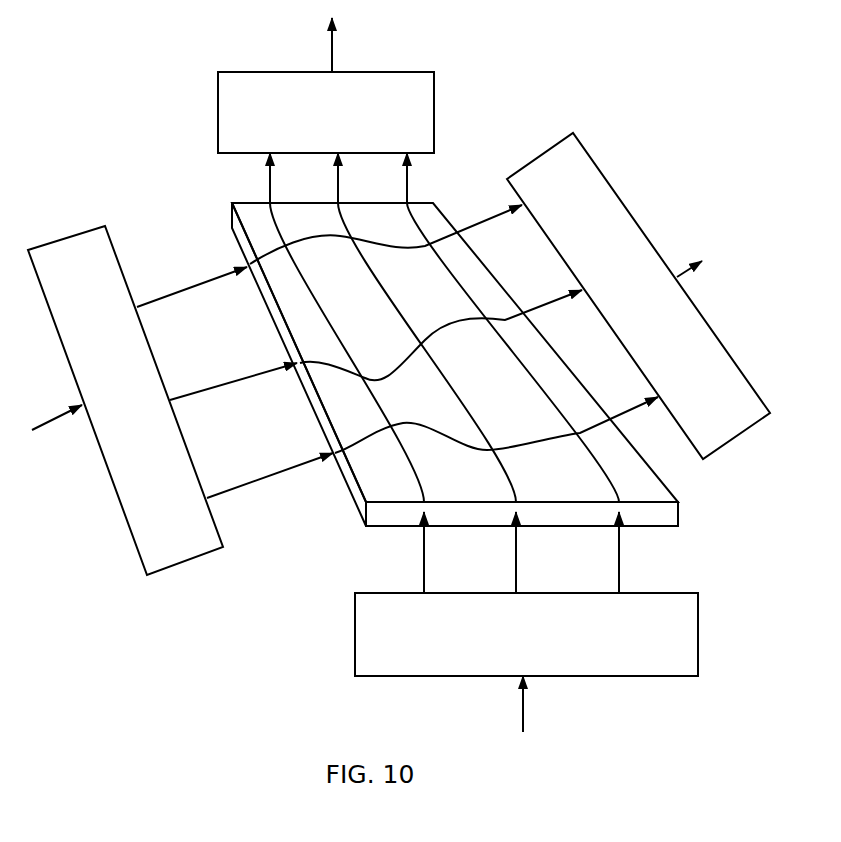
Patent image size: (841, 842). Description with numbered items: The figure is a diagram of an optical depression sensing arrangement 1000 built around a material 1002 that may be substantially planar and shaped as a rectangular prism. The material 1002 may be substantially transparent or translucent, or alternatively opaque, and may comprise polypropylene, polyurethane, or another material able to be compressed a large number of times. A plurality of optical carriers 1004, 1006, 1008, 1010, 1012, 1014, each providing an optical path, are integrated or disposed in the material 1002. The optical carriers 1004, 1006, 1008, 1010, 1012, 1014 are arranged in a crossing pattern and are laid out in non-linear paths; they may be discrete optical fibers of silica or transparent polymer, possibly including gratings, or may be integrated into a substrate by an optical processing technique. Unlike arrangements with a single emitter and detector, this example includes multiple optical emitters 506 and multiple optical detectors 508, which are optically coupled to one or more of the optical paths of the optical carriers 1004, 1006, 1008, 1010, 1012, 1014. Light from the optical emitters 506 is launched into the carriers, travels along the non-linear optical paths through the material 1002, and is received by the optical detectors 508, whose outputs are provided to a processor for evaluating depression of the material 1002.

The depression sensing arrangement 1000 is at (78, 35).
The optical emitter 506 is at (93, 230).
The optical detector 508 is at (218, 72).
The material 1002 is at (231, 202).
The optical carrier 1004 is at (277, 257).
The optical carrier 1006 is at (297, 363).
The optical carrier 1008 is at (332, 448).
The optical carrier 1010 is at (413, 470).
The optical carrier 1012 is at (505, 476).
The optical carrier 1014 is at (585, 480).